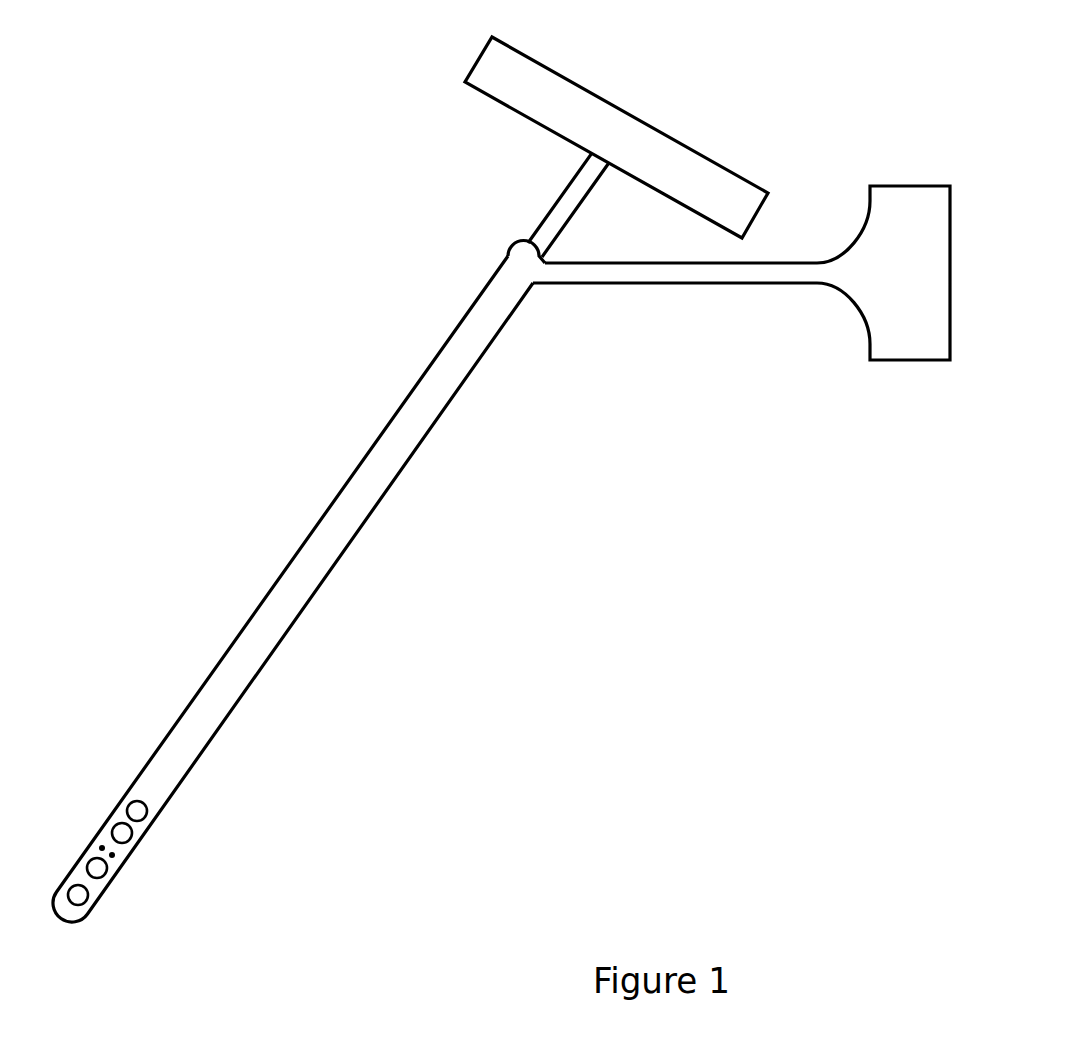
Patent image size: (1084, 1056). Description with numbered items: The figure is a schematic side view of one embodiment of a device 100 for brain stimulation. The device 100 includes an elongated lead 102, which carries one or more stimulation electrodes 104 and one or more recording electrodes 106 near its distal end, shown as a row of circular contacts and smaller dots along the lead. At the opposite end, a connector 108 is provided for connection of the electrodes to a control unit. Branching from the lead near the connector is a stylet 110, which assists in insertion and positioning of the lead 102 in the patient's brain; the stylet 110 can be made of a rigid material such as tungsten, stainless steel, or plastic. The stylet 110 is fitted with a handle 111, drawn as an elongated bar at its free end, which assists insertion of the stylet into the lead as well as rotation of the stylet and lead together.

The device 100 is at (264, 249).
The lead 102 is at (346, 553).
The stimulation electrodes 104 is at (147, 812).
The recording electrodes 106 is at (112, 855).
The connector 108 is at (868, 352).
The stylet 110 is at (555, 201).
The handle 111 is at (473, 65).